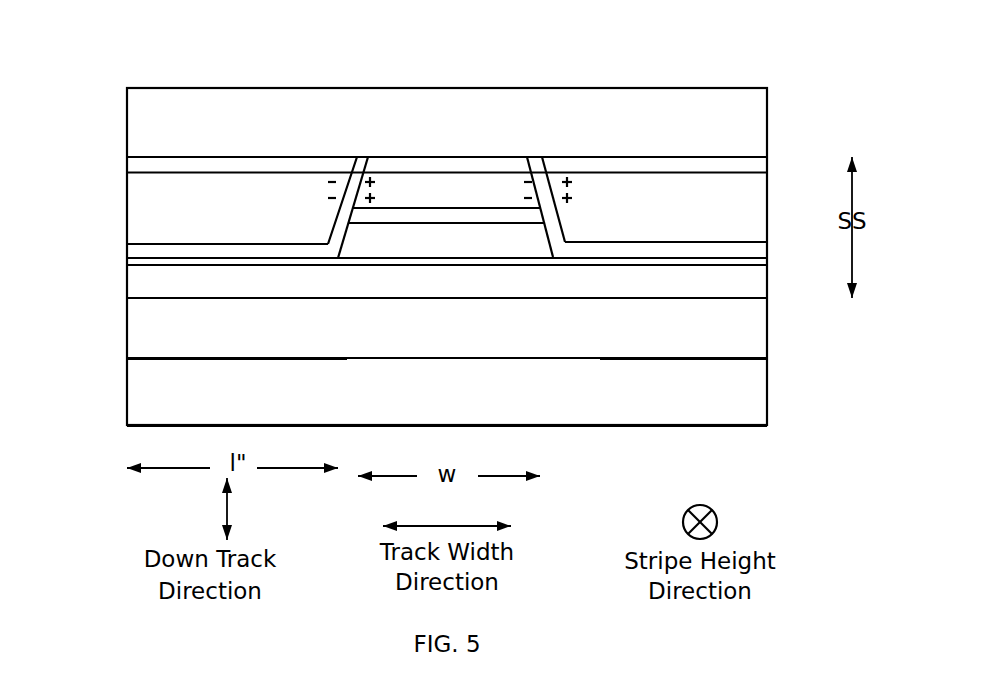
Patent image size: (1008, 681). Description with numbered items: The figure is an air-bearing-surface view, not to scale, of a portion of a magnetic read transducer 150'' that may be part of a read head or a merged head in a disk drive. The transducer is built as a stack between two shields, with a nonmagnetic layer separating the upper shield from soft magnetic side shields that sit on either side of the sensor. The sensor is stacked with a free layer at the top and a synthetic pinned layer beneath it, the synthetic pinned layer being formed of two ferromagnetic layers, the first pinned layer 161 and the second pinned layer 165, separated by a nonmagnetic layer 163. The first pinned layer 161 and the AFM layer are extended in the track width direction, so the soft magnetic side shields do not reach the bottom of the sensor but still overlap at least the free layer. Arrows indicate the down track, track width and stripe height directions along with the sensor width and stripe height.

The magnetic read transducer 150'' is at (447, 215).
The pinned layer 1 161 is at (530, 298).
The nonmagnetic layer 163 is at (146, 266).
The pinned layer 2 165 is at (547, 257).